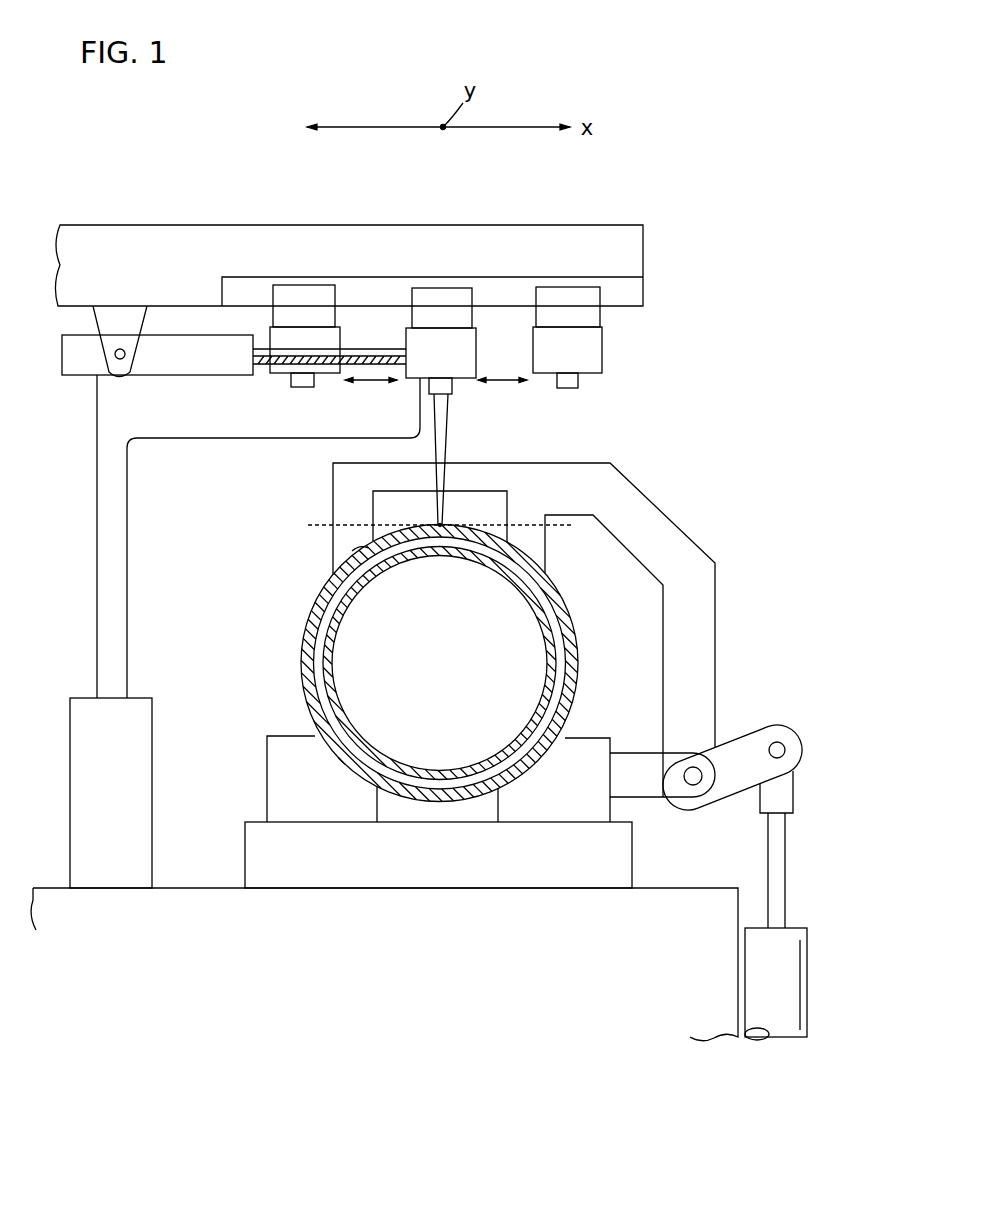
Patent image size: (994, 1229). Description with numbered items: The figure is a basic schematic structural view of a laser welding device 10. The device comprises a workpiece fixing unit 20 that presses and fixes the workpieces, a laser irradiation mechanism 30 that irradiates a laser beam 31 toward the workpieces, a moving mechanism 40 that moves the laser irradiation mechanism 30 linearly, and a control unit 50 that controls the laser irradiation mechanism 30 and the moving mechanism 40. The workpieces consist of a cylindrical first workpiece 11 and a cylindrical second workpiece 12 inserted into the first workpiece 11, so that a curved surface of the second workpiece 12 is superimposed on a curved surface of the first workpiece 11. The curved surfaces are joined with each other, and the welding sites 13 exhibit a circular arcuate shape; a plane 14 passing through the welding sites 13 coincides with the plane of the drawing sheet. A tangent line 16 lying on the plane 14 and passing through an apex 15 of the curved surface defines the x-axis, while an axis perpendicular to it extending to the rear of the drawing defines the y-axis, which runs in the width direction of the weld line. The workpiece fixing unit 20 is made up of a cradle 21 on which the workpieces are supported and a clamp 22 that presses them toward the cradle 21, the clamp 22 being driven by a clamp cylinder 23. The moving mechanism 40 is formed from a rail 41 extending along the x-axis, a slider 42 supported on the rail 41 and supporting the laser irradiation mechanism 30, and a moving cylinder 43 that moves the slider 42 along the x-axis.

The laser welding device 10 is at (765, 222).
The first workpiece 11 is at (566, 670).
The second workpiece 12 is at (553, 652).
The welding site 13 is at (360, 547).
The plane 14 is at (718, 441).
The apex 15 is at (445, 525).
The tangent line 16 is at (318, 522).
The workpiece fixing unit 20 is at (552, 624).
The cradle 21 is at (448, 872).
The clamp 22 is at (580, 485).
The clamp cylinder 23 is at (786, 1030).
The laser irradiation mechanism 30 is at (270, 341).
The laser beam 31 is at (443, 427).
The moving mechanism 40 is at (620, 225).
The rail 41 is at (358, 290).
The slider 42 is at (438, 318).
The moving cylinder 43 is at (83, 375).
The control unit 50 is at (85, 705).